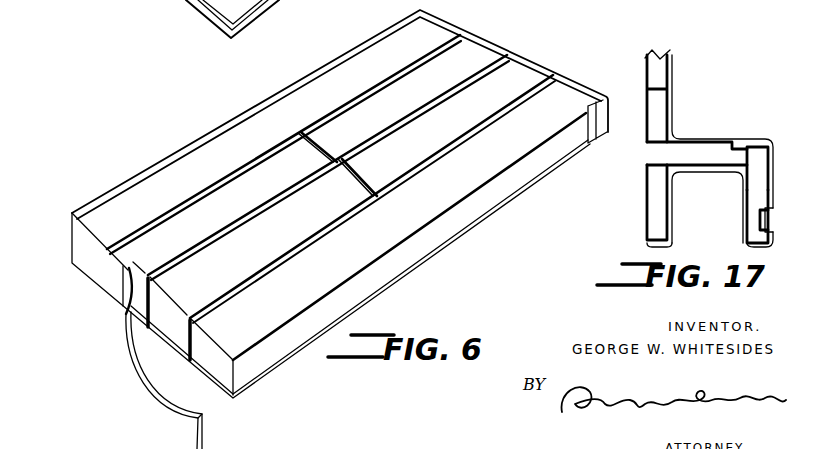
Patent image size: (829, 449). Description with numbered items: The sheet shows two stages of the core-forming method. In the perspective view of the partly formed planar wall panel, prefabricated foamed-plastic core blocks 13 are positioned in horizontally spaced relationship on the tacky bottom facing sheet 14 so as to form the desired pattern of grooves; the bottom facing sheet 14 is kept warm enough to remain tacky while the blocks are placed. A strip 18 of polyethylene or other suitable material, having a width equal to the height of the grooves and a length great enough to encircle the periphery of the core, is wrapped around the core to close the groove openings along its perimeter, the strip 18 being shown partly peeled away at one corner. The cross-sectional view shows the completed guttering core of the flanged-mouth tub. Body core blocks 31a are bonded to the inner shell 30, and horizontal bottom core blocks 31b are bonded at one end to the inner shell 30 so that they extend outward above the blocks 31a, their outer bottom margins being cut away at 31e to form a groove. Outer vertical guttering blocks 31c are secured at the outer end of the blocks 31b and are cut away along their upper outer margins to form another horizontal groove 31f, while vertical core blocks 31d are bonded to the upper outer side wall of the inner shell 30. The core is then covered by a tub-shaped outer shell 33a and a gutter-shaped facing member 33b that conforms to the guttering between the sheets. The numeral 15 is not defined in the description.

In FIG. 6, the core blocks 13 is at (242, 216).
In FIG. 6, the bottom facing sheet 14 is at (445, 250).
In FIG. 6, the spacer bars 15 is at (563, 92).
In FIG. 6, the strip 18 is at (606, 98).
In FIG. 17, the inner shell 30 is at (701, 136).
In FIG. 17, the body core blocks 31a is at (657, 68).
In FIG. 17, the bottom core blocks 31b is at (701, 154).
In FIG. 17, the outer vertical guttering blocks 31c is at (757, 194).
In FIG. 17, the vertical core blocks 31d is at (656, 203).
In FIG. 17, the cut-away portion 31e is at (742, 147).
In FIG. 17, the horizontal groove 31f is at (763, 219).
In FIG. 17, the outer shell 33a is at (673, 76).
In FIG. 17, the gutter-shaped facing member 33b is at (674, 210).